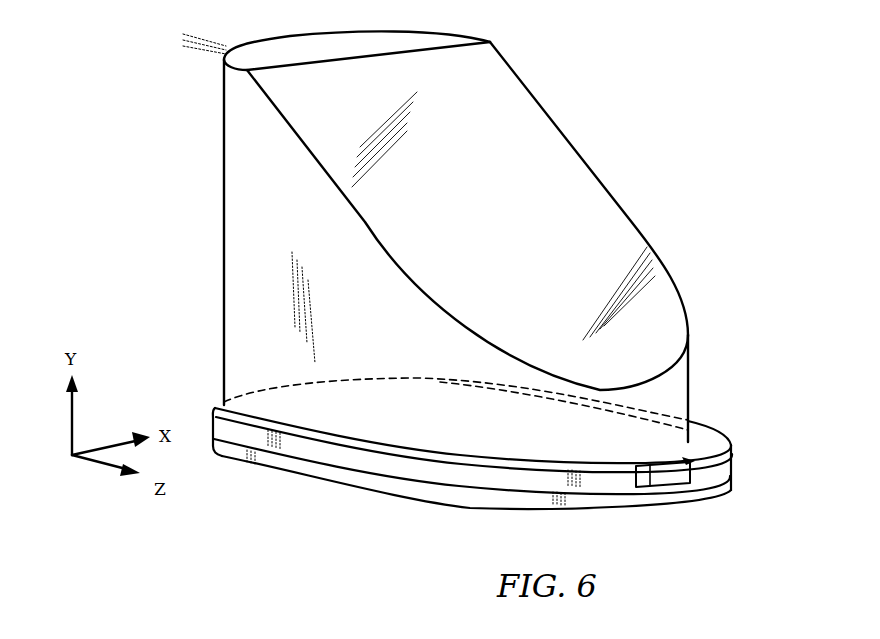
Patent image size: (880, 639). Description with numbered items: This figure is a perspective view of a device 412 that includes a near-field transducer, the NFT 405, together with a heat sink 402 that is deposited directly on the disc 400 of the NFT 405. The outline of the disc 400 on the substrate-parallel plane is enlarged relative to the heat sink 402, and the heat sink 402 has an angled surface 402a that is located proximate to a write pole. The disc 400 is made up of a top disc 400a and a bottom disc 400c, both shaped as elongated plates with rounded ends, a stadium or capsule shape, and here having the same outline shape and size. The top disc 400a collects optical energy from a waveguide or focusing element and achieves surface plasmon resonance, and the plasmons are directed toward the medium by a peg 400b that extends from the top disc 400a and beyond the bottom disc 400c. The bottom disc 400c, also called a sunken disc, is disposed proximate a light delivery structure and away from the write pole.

The disc 400 is at (362, 490).
The top disc 400a is at (248, 440).
The peg 400b is at (667, 482).
The bottom disc 400c is at (318, 473).
The heat sink 402 is at (597, 178).
The angled surface 402a is at (530, 122).
The NFT 405 is at (524, 489).
The device 412 is at (774, 222).